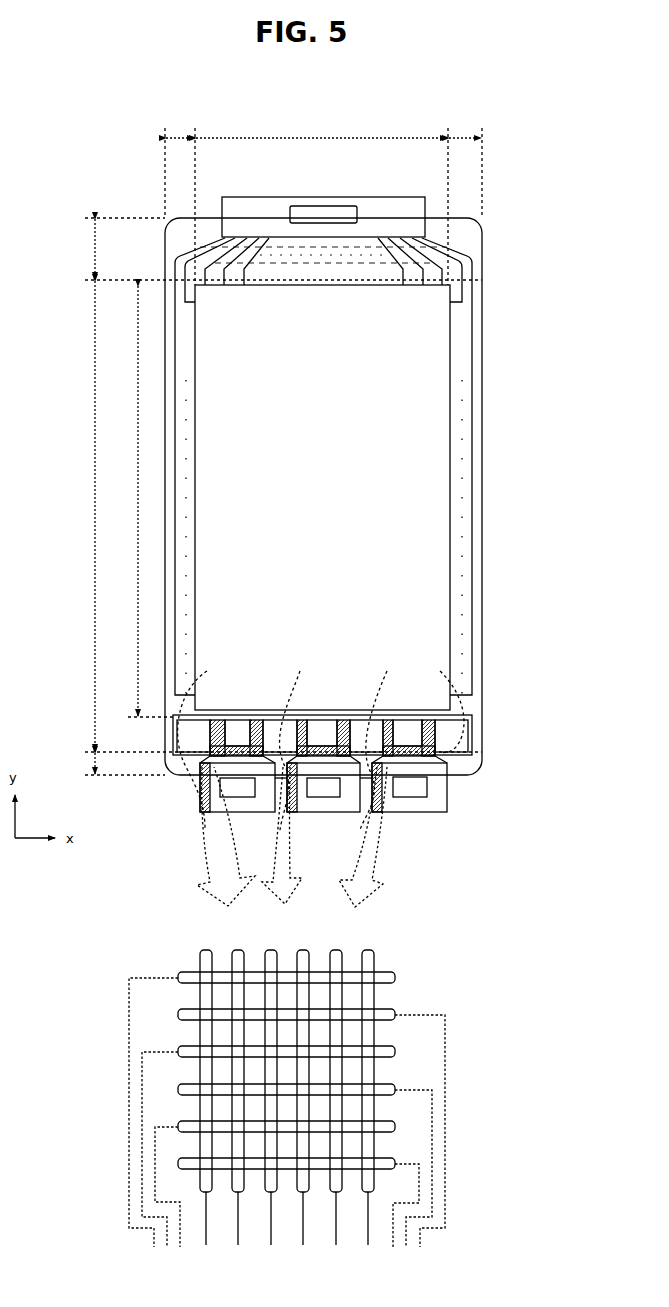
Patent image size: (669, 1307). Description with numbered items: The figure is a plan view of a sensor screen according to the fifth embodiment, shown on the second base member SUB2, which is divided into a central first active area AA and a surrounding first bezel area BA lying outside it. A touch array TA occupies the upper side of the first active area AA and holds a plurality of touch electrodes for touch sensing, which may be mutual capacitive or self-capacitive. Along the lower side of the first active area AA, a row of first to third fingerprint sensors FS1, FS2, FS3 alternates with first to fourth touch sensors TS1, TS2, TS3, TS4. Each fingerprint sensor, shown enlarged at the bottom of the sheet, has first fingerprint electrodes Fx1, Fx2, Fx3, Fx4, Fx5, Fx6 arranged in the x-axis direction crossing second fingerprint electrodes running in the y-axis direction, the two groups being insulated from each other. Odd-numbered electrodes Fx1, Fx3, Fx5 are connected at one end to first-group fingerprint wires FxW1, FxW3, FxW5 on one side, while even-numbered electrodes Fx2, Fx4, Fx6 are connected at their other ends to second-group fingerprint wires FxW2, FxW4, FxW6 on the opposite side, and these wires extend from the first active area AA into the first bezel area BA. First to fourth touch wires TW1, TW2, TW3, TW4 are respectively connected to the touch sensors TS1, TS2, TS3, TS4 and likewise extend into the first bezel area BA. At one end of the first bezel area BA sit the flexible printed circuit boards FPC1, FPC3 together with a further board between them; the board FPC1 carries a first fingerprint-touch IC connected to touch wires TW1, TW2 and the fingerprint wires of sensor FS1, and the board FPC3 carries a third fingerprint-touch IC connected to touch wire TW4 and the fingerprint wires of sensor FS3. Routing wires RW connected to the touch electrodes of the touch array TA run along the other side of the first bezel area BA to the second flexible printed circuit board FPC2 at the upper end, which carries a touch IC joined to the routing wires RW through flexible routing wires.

The first bezel area BA is at (273, 446).
The first active area AA is at (256, 434).
The touch array TA is at (123, 501).
The second flexible printed circuit board FPC2 is at (380, 197).
The routing wires RW is at (478, 256).
The second base member SUB2 is at (484, 733).
The first touch sensor TS1 is at (196, 718).
The second touch sensor TS2 is at (279, 718).
The third touch sensor TS3 is at (365, 718).
The fourth touch sensor TS4 is at (446, 718).
The first fingerprint sensor FS1 is at (240, 718).
The second fingerprint sensor FS2 is at (322, 718).
The third fingerprint sensor FS3 is at (408, 718).
The first touch wire TW1 is at (203, 742).
The second touch wire TW2 is at (301, 742).
The third touch wire TW3 is at (384, 742).
The fourth touch wire TW4 is at (441, 704).
The 1-1 flexible printed circuit board FPC1 is at (199, 783).
The 1-3 flexible printed circuit board FPC3 is at (448, 808).
The first fingerprint electrode Fx1 is at (383, 973).
The first fingerprint electrode Fx2 is at (383, 1010).
The first fingerprint electrode Fx3 is at (383, 1047).
The first fingerprint electrode Fx4 is at (383, 1085).
The first fingerprint electrode Fx5 is at (383, 1122).
The first fingerprint electrode Fx6 is at (383, 1159).
The 1-1 fingerprint wire FxW1 is at (127, 1140).
The 1-2 fingerprint wire FxW2 is at (446, 1138).
The 1-1 fingerprint wire FxW3 is at (140, 1162).
The 1-2 fingerprint wire FxW4 is at (433, 1162).
The 1-1 fingerprint wire FxW5 is at (153, 1187).
The 1-2 fingerprint wire FxW6 is at (420, 1186).